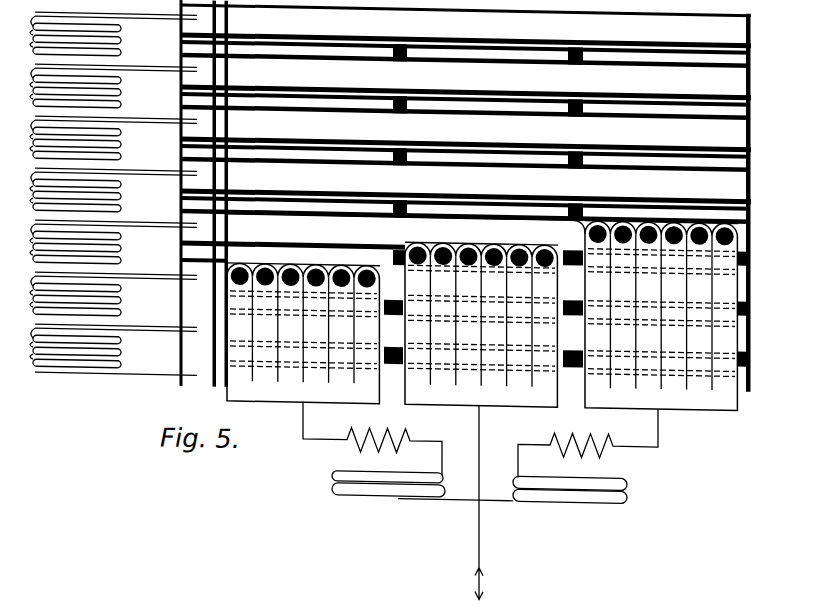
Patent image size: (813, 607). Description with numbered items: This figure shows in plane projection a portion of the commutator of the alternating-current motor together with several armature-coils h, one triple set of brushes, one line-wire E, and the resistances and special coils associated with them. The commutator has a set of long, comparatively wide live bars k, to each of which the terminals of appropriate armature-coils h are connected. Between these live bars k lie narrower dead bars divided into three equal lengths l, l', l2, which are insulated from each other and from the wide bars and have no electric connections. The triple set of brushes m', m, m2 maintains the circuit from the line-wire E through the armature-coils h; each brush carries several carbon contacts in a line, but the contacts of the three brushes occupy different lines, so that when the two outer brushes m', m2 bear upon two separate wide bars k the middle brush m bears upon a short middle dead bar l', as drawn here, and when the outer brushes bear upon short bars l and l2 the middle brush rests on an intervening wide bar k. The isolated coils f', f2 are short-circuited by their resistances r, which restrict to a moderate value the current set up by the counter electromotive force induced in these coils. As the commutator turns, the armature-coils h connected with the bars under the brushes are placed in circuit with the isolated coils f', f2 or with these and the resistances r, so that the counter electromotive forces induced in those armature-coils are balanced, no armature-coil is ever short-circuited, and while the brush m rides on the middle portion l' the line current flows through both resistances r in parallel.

The armature-coils h is at (113, 193).
The live bars k is at (466, 129).
The dead bar l is at (294, 150).
The middle dead bar l' is at (491, 129).
The dead bar l2 is at (662, 131).
The brush m' is at (315, 333).
The brush m is at (494, 324).
The brush m2 is at (487, 312).
The resistance r is at (480, 441).
The isolated coil f' is at (405, 498).
The isolated coil f2 is at (553, 500).
The line-wire E is at (483, 503).